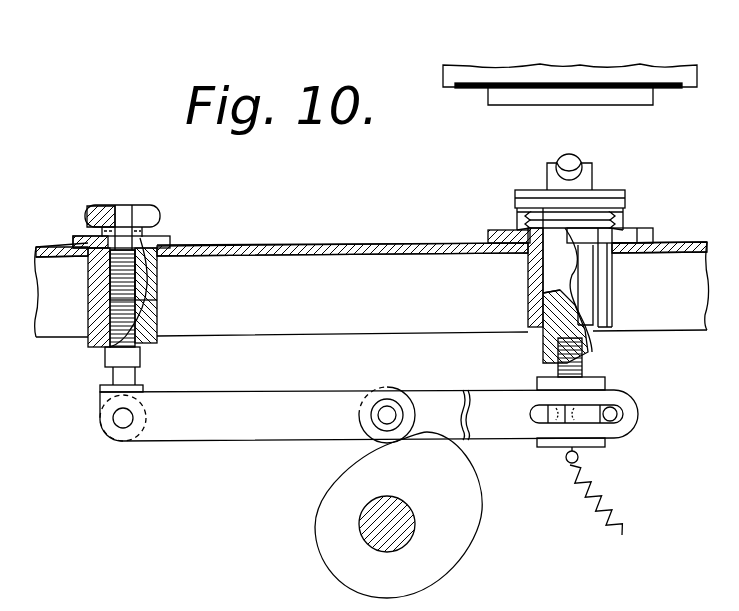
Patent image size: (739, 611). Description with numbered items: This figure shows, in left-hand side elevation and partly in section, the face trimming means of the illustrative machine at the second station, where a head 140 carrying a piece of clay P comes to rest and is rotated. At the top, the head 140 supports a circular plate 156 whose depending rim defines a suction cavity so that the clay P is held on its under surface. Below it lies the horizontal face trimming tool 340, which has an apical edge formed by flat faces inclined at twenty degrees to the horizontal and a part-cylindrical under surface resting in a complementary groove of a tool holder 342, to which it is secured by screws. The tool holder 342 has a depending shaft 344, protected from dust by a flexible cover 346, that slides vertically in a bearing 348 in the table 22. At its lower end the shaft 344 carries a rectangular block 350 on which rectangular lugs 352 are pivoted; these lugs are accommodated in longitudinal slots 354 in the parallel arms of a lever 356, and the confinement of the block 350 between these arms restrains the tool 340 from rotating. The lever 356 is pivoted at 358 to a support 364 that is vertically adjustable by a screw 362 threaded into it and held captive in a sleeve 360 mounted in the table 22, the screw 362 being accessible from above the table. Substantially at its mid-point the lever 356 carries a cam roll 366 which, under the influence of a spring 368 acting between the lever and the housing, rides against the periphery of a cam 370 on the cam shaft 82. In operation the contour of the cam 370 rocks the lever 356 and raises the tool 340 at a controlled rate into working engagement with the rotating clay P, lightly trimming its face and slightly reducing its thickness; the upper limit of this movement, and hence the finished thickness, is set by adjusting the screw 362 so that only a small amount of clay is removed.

The head 140 is at (473, 57).
The circular plate 156 is at (473, 78).
The piece of clay P is at (620, 95).
The table 22 is at (373, 250).
The face trimming tool 340 is at (568, 165).
The tool holder 342 is at (592, 170).
The shaft 344 is at (553, 290).
The flexible cover 346 is at (521, 210).
The bearing 348 is at (600, 290).
The rectangular block 350 is at (596, 380).
The rectangular lugs 352 is at (558, 416).
The longitudinal slots 354 is at (612, 418).
The lever 356 is at (485, 398).
The pivot 358 is at (124, 420).
The sleeve 360 is at (106, 328).
The screw 362 is at (130, 270).
The support 364 is at (140, 306).
The cam roll 366 is at (387, 389).
The spring 368 is at (612, 497).
The cam 370 is at (462, 513).
The cam shaft 82 is at (395, 545).